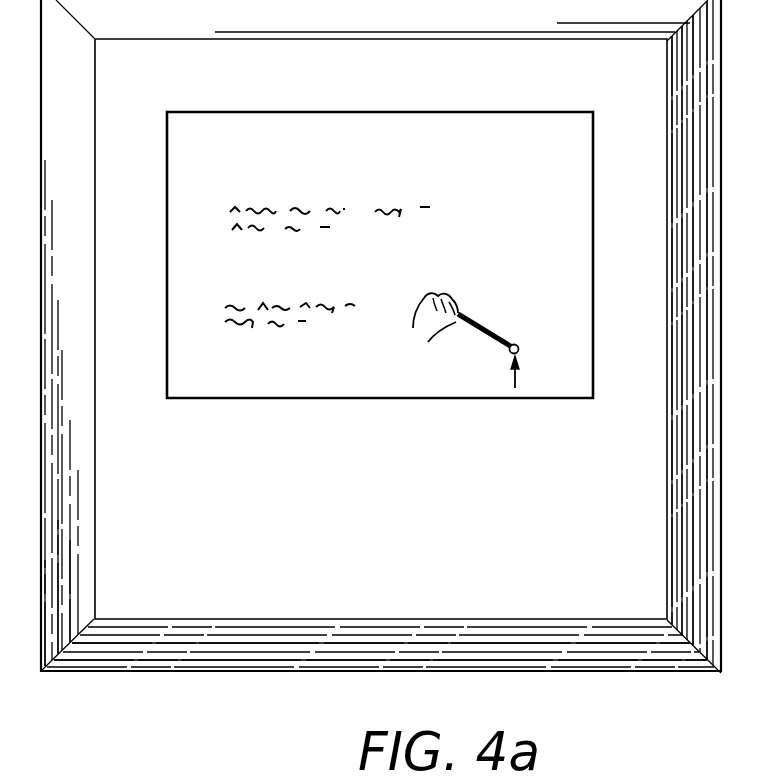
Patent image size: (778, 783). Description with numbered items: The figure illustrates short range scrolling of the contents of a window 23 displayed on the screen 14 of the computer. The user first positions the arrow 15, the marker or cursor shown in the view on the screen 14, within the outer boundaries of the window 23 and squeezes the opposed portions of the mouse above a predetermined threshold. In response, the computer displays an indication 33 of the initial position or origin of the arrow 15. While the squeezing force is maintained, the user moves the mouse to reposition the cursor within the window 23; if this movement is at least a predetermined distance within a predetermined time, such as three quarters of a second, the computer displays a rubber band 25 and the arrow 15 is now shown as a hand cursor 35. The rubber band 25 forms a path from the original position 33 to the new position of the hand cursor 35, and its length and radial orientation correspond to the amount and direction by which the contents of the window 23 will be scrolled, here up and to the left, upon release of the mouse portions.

The screen 14 is at (159, 594).
The arrow 15 is at (518, 383).
The window 23 is at (214, 398).
The rubber band 25 is at (478, 323).
The indication of the initial position 33 is at (519, 346).
The hand cursor 35 is at (442, 334).